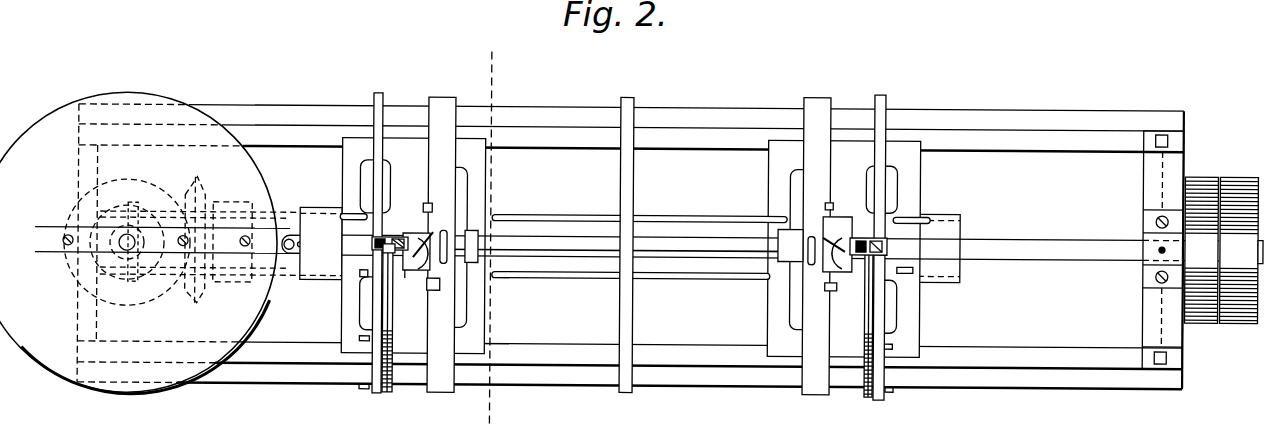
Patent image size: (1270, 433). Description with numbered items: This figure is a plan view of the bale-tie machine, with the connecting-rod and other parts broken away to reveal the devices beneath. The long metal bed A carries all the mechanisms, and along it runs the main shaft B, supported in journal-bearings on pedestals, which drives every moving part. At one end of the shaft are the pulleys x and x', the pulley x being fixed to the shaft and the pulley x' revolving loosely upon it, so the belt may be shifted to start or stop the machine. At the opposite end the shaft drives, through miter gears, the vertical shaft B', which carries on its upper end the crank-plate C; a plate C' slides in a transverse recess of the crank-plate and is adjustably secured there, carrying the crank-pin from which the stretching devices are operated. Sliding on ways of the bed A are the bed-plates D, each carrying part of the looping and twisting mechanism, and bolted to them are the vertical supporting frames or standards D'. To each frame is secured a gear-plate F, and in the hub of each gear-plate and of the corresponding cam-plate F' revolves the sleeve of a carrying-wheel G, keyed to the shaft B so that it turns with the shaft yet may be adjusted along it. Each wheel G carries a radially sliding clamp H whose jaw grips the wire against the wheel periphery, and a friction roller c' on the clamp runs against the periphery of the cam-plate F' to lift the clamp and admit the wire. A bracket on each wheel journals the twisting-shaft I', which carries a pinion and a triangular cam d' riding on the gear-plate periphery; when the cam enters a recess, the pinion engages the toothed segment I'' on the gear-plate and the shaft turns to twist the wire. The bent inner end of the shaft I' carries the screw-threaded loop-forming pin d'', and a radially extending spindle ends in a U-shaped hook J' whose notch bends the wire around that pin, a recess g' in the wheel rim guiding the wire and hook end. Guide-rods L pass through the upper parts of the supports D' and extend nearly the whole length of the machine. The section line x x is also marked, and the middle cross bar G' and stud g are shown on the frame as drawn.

The bed A is at (1040, 356).
The shaft B is at (802, 239).
The vertical shaft B' is at (210, 273).
The crank-plate C is at (139, 243).
The plate C' is at (142, 241).
The friction wheel or roller c' is at (177, 240).
The bed-plate D is at (631, 265).
The supporting frame or standard D' is at (629, 261).
The triangular block or cam d' is at (629, 231).
The loop-forming pin d'' is at (369, 246).
The gear-plate F is at (620, 259).
The cam-plate F' is at (653, 207).
The carrying disk or wheel G is at (629, 245).
The middle cross bar G' is at (610, 244).
The stud g is at (630, 297).
The recess g' is at (440, 290).
The clamp H is at (440, 237).
The twisting-shaft I' is at (402, 281).
The toothed segment I'' is at (627, 318).
The U-shaped hook J' is at (635, 227).
The guide-rod L is at (520, 213).
The fixed pulley x is at (854, 235).
The loose pulley x' is at (1241, 250).